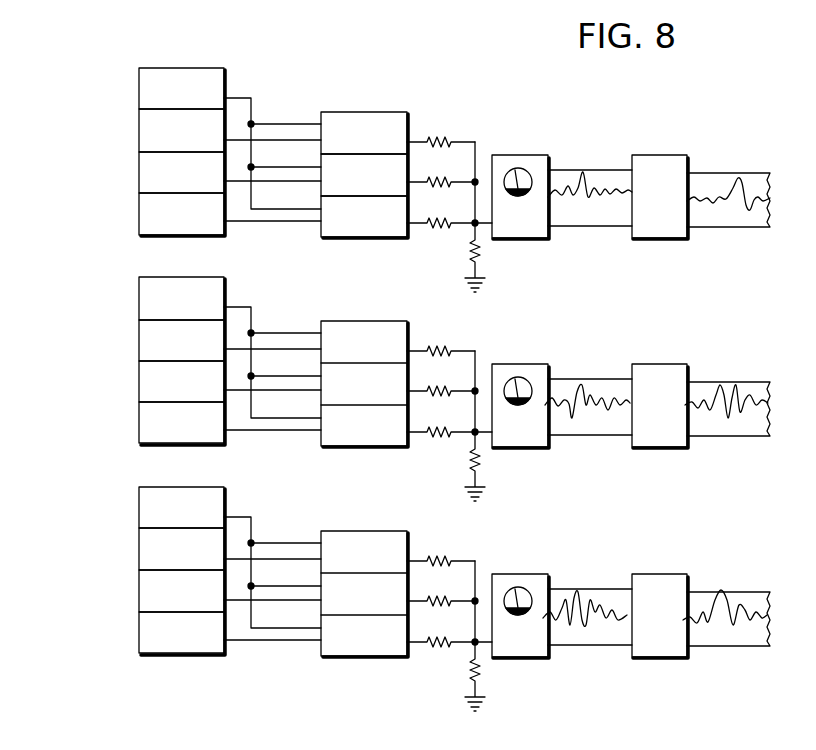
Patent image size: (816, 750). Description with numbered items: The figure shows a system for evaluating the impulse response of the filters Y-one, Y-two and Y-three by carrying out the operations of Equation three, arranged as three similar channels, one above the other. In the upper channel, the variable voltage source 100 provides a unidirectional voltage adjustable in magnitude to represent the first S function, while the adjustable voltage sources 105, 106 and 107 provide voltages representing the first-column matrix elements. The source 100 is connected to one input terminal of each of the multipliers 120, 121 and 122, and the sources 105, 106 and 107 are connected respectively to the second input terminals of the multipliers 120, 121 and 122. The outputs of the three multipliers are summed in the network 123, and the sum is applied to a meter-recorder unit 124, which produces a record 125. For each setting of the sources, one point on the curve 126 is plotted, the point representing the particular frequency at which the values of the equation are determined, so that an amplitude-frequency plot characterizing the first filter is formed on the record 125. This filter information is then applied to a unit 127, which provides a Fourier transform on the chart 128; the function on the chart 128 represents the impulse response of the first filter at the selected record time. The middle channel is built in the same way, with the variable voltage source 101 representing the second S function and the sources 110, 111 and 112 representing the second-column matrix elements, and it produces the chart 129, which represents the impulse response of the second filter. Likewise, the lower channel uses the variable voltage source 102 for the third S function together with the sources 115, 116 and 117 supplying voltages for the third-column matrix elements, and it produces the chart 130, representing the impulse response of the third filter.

The variable voltage source 100 is at (139, 93).
The adjustable voltage source 105 is at (139, 134).
The adjustable voltage source 106 is at (139, 174).
The adjustable voltage source 107 is at (139, 216).
The variable voltage source 101 is at (139, 303).
The voltage source 110 is at (139, 344).
The voltage source 111 is at (139, 384).
The voltage source 112 is at (139, 423).
The variable voltage source 102 is at (139, 511).
The voltage source 115 is at (139, 553).
The voltage source 116 is at (139, 595).
The voltage source 117 is at (139, 635).
The multiplier 120 is at (379, 143).
The multiplier 121 is at (379, 185).
The multiplier 122 is at (379, 226).
The summing network 123 is at (493, 133).
The meter-recorder unit 124 is at (518, 164).
The record 125 is at (575, 181).
The curve 126 is at (580, 202).
The Fourier transform unit 127 is at (655, 236).
The chart 128 is at (707, 183).
The chart 129 is at (705, 389).
The chart 130 is at (702, 601).